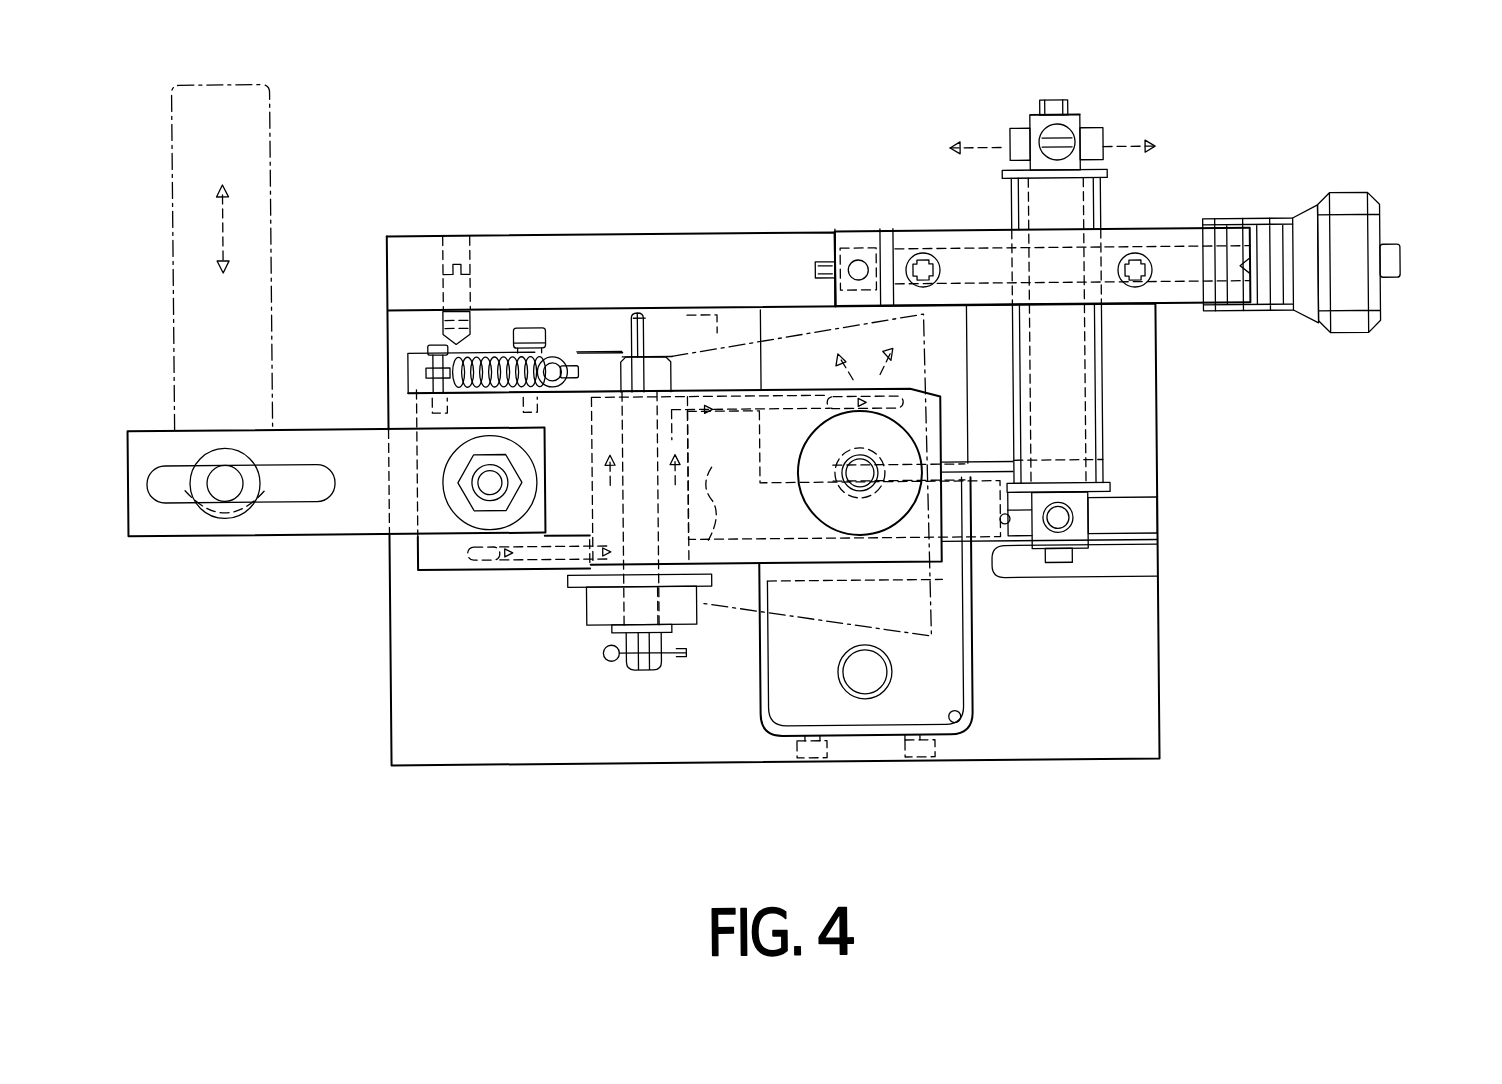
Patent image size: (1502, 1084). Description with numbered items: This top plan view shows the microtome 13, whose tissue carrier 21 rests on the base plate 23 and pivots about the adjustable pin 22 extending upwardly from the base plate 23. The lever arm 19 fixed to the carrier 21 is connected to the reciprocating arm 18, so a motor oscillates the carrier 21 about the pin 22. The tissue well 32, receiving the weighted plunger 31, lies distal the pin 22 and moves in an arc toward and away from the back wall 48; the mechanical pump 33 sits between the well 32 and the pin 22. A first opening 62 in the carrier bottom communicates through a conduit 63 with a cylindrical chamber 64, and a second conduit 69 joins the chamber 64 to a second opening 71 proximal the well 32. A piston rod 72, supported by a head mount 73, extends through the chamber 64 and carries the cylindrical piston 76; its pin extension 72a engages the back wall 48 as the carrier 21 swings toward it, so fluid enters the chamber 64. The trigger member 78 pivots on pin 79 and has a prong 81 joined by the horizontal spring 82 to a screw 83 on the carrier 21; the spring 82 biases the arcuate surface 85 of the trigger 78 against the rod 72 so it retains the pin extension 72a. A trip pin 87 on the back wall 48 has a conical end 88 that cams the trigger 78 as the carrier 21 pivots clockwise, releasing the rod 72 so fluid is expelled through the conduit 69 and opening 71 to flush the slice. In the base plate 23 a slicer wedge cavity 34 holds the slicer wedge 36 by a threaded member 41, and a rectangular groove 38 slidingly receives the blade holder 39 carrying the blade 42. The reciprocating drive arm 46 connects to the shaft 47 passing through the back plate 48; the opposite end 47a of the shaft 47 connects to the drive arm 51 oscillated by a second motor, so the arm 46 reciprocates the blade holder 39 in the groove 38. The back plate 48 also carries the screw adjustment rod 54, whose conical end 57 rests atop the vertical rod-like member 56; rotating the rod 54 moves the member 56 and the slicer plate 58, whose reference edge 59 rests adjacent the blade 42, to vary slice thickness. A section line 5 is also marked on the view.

The microtome 13 is at (320, 708).
The reciprocating arm 18 is at (272, 150).
The lever arm 19 is at (148, 535).
The tissue carrier 21 is at (420, 549).
The adjustable pin 22 is at (490, 483).
The base plate 23 is at (1165, 740).
The weighted plunger 31 is at (858, 480).
The tissue well 32 is at (872, 490).
The mechanical pump 33 is at (592, 640).
The slicer wedge cavity 34 is at (960, 720).
The slicer wedge 36 is at (930, 690).
The rectangular groove 38 is at (1145, 506).
The blade holder 39 is at (1022, 530).
The threaded member 41 is at (862, 675).
The blade 42 is at (742, 465).
The reciprocating drive arm 46 is at (1062, 518).
The shaft 47 is at (1090, 398).
The opposite end of shaft 47a is at (1035, 122).
The back plate 48 is at (510, 236).
The drive arm 51 is at (1062, 135).
The screw adjustment rod 54 is at (1392, 266).
The rod-like member 56 is at (858, 262).
The conical end 57 is at (820, 265).
The slicer plate 58 is at (757, 322).
The reference edge 59 is at (768, 470).
The first opening 62 is at (478, 562).
The conduit 63 is at (520, 565).
The cylindrical chamber 64 is at (598, 456).
The second conduit 69 is at (800, 397).
The second opening 71 is at (905, 395).
The piston rod 72 is at (648, 378).
The pin extension 72a is at (650, 340).
The head mount 73 is at (590, 612).
The cylindrical piston 76 is at (700, 600).
The trigger member 78 is at (592, 338).
The pin 79 is at (535, 328).
The prong 81 is at (570, 358).
The horizontal spring 82 is at (490, 356).
The screw 83 is at (430, 360).
The arcuate surface 85 is at (628, 372).
The trip pin 87 is at (440, 292).
The conical end 88 is at (443, 330).
The section line 5 is at (312, 324).